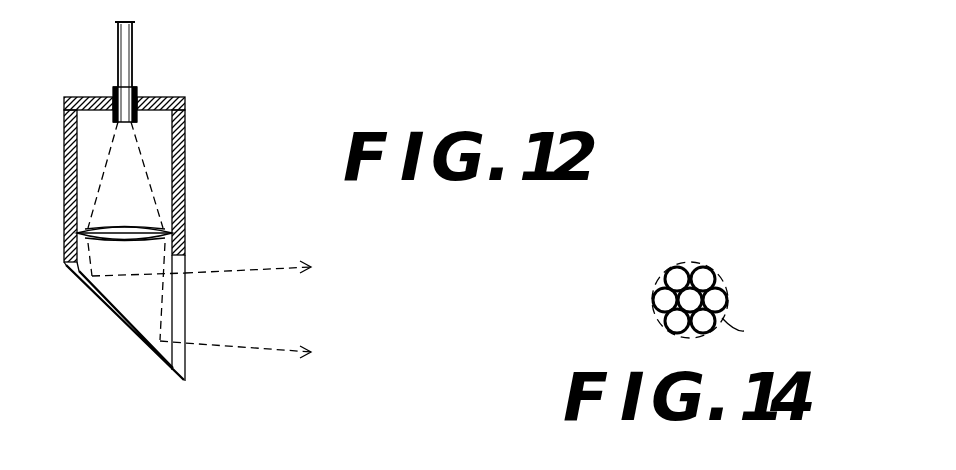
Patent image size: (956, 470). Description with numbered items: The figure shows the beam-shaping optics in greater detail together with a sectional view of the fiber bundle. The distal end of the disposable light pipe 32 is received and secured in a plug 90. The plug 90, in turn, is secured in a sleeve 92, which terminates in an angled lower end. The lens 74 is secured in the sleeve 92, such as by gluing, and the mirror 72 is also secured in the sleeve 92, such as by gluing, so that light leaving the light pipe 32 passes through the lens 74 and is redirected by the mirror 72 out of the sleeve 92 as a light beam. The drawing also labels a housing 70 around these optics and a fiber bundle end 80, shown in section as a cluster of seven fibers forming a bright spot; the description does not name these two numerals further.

In FIG. 12, the disposable light pipe 32 is at (132, 51).
In FIG. 12, the plug 90 is at (167, 98).
In FIG. 12, the housing 70 is at (222, 142).
In FIG. 12, the lens 74 is at (147, 228).
In FIG. 12, the sleeve 92 is at (205, 262).
In FIG. 12, the mirror 72 is at (132, 324).
In FIG. 14, the fiber bundle end 80 is at (655, 288).